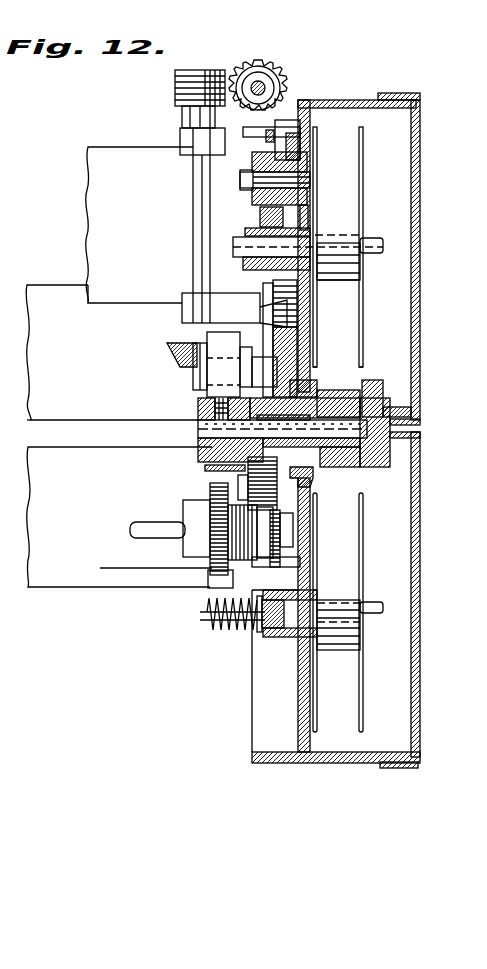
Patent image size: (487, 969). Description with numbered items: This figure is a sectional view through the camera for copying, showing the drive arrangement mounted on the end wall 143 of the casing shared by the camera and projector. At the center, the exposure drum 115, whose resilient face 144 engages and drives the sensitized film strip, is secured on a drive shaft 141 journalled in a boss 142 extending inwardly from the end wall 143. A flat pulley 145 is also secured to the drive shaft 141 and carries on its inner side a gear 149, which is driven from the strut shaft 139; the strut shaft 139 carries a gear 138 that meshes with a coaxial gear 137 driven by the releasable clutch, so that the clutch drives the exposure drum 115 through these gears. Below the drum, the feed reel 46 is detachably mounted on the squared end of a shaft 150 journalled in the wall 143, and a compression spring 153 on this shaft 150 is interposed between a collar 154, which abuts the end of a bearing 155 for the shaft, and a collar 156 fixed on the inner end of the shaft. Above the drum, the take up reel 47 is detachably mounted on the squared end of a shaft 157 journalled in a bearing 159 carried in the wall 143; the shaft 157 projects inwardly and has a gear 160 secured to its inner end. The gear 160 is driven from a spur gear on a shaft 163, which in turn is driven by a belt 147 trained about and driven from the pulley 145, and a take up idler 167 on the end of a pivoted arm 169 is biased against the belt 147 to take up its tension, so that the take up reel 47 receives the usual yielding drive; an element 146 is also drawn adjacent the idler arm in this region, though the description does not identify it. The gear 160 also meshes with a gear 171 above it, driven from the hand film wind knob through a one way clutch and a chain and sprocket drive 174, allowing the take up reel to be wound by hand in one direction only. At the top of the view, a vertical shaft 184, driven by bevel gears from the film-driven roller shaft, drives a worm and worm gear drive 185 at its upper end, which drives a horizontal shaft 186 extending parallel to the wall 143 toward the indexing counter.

The feed reel 46 is at (363, 713).
The take up reel 47 is at (362, 350).
The exposure drum 115 is at (355, 464).
The coaxial gear 137 is at (280, 563).
The gear 138 is at (305, 490).
The strut shaft 139 is at (243, 488).
The drive shaft 141 is at (197, 425).
The boss 142 is at (310, 387).
The end wall 143 is at (300, 690).
The resilient face 144 is at (343, 387).
The flat pulley 145 is at (200, 455).
The box 146 is at (200, 387).
The belt 147 is at (218, 332).
The gear 149 is at (290, 370).
The shaft 150 is at (277, 613).
The compression spring 153 is at (227, 632).
The collar 154 is at (215, 597).
The bearing 155 is at (285, 632).
The collar 156 is at (212, 632).
The shaft 157 is at (237, 243).
The bearing 159 is at (233, 263).
The gear 160 is at (253, 220).
The shaft 163 is at (255, 170).
The take up idler 167 is at (190, 363).
The pivoted arm 169 is at (285, 345).
The gear 171 is at (258, 142).
The chain and sprocket drive 174 is at (275, 138).
The vertical shaft 184 is at (193, 222).
The worm and worm gear drive 185 is at (207, 72).
The horizontal shaft 186 is at (261, 82).